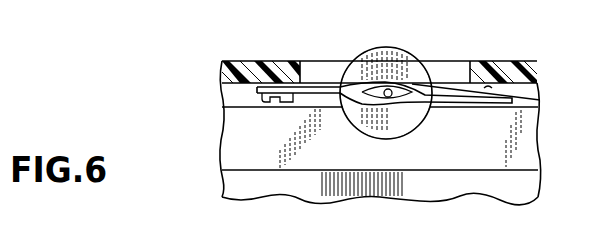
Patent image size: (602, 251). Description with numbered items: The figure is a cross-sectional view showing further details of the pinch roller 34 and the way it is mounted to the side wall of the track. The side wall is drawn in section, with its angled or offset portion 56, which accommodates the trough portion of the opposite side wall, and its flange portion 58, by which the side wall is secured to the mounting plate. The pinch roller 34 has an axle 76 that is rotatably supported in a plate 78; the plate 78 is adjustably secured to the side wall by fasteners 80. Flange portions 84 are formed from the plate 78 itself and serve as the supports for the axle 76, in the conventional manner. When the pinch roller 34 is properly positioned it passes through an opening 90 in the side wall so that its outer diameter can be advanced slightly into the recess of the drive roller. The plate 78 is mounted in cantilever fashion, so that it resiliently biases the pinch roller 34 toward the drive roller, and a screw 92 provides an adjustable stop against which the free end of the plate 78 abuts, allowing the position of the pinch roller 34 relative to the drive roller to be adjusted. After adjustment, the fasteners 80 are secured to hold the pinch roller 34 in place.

The pinch roller 34 is at (428, 120).
The angled or offset portion 56 is at (228, 98).
The flange portion 58 is at (237, 158).
The axle 76 is at (389, 97).
The plate 78 is at (327, 85).
The fasteners 80 is at (263, 103).
The flange portions 84 is at (400, 83).
The opening 90 is at (298, 71).
The screw 92 is at (540, 100).